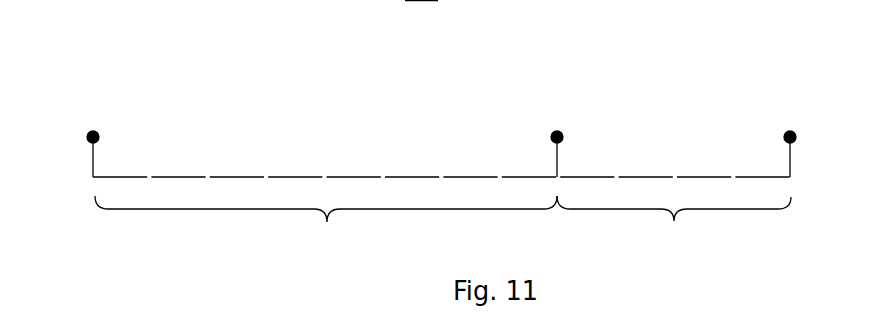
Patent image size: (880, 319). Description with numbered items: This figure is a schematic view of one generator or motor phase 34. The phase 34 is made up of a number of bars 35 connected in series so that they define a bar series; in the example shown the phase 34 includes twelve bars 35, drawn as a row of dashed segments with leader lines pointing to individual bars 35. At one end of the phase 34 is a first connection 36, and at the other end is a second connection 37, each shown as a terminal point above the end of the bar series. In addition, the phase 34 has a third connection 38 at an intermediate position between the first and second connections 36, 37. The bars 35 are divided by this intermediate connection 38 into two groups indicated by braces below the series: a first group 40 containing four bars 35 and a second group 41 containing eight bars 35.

The phase 34 is at (181, 62).
The bars 35 is at (468, 177).
The first connection 36 is at (786, 131).
The second connection 37 is at (89, 131).
The third connection 38 is at (563, 132).
The first group 40 is at (674, 234).
The second group 41 is at (326, 233).